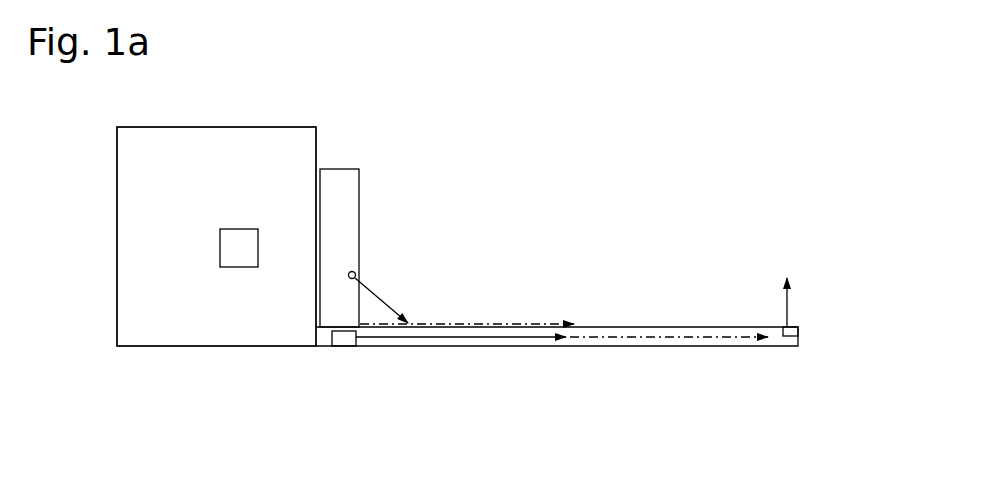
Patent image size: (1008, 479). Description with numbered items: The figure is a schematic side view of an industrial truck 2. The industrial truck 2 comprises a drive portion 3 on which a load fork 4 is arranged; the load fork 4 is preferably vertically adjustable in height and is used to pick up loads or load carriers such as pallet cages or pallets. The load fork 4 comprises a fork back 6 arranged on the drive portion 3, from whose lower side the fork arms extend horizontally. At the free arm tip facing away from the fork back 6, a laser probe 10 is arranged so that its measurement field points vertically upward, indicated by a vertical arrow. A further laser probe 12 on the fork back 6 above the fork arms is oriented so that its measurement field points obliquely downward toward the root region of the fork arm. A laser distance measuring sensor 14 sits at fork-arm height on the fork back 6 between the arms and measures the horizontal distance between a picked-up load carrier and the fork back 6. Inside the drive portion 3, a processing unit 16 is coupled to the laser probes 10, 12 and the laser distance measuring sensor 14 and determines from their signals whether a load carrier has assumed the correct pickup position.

The industrial truck 2 is at (96, 181).
The drive portion 3 is at (208, 157).
The load fork 4 is at (398, 227).
The fork back 6 is at (336, 190).
The laser probe 10 is at (800, 330).
The laser probe 12 is at (357, 274).
The laser distance measuring sensor 14 is at (344, 348).
The processing unit 16 is at (238, 248).